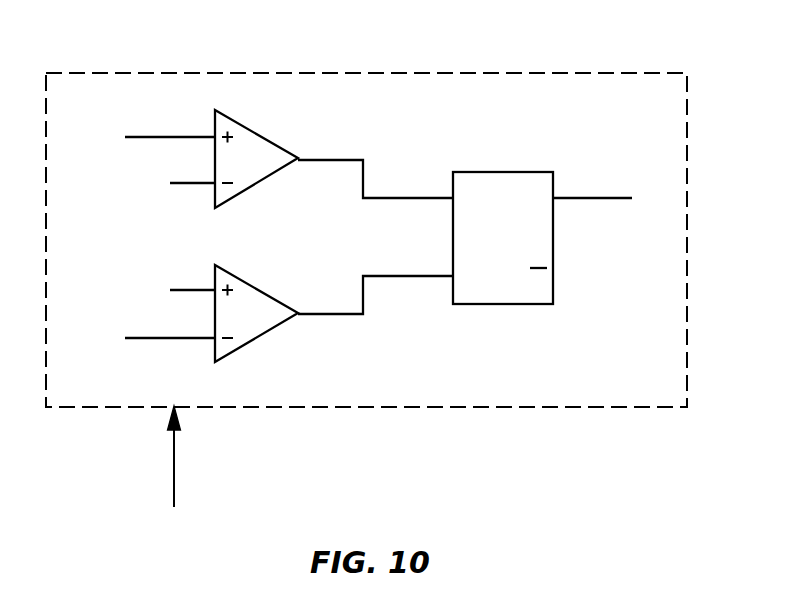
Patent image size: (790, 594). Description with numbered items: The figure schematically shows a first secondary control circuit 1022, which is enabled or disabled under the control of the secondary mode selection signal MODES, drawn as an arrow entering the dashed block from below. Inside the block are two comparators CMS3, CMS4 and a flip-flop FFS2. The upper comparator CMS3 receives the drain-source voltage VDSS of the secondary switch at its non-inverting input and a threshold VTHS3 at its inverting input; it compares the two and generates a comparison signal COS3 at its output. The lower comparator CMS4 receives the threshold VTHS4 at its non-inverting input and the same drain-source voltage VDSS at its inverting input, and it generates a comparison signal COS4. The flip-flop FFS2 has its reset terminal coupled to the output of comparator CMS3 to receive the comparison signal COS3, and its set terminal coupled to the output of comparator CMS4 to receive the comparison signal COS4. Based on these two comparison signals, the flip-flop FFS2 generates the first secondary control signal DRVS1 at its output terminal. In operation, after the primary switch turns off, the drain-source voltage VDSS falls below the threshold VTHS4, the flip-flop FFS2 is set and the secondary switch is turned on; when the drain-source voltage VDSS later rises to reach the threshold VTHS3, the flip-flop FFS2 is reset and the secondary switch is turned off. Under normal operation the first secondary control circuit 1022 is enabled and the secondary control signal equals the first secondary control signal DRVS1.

The first secondary control circuit 1022 is at (623, 73).
The comparator CMS3 is at (256, 159).
The comparator CMS4 is at (256, 313).
The flip-flop FFS2 is at (503, 226).
The drain-source voltage of the secondary switch VDSS is at (169, 228).
The threshold VTHS3 is at (179, 195).
The threshold VTHS4 is at (174, 279).
The comparison signal COS3 is at (375, 167).
The comparison signal COS4 is at (375, 295).
The first secondary control signal DRVS1 is at (592, 187).
The secondary mode selection signal MODES is at (206, 461).